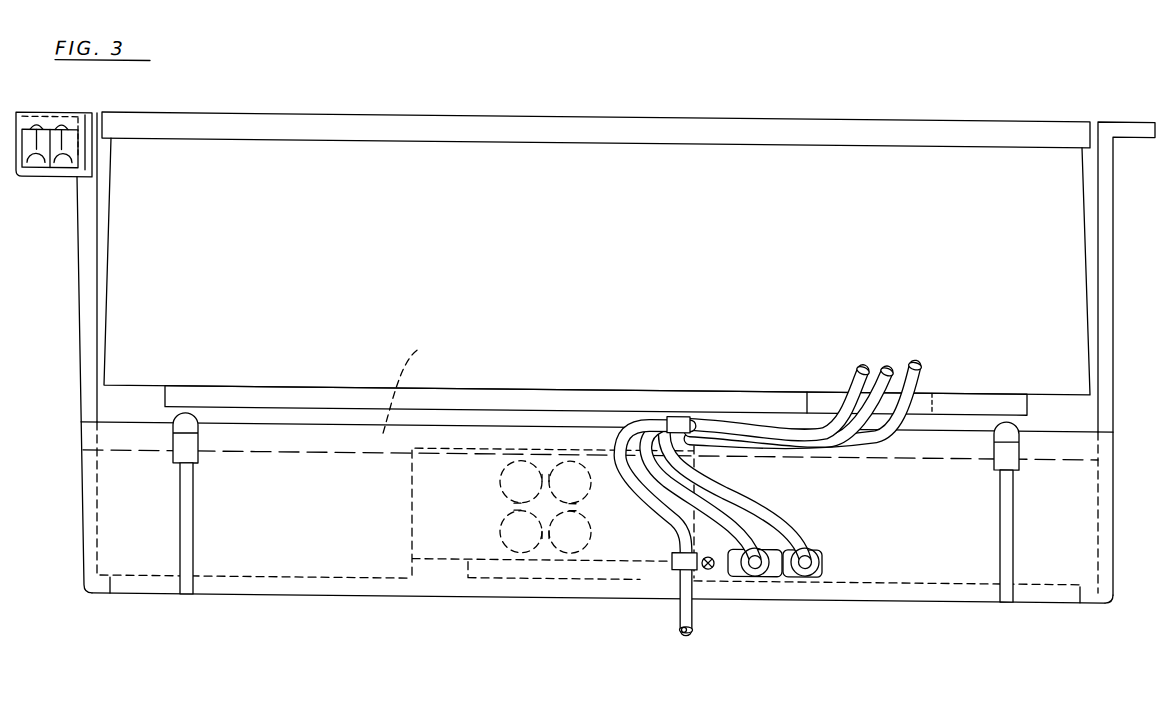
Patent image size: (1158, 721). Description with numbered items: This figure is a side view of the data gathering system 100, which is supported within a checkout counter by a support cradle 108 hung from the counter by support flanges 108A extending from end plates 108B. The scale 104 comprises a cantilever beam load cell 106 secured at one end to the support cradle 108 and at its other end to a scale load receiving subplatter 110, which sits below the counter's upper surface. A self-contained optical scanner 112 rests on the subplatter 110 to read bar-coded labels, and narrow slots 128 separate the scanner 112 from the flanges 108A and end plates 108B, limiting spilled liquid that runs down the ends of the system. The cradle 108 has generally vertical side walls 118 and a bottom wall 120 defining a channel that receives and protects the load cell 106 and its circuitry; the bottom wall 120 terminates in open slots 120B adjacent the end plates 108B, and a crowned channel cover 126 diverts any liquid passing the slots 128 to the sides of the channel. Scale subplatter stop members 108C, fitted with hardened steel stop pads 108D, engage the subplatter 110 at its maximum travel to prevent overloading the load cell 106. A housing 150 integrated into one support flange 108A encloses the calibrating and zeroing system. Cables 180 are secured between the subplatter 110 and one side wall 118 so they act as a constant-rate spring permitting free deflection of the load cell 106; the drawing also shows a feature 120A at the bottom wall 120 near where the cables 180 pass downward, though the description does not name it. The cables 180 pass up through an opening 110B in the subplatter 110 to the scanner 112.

The data gathering system 100 is at (710, 106).
The load cell scale 104 is at (587, 366).
The cantilever beam load cell 106 is at (432, 498).
The support cradle 108 is at (440, 602).
The support flange 108A is at (1138, 78).
The end plate 108B is at (78, 333).
The scale subplatter stop member 108C is at (176, 462).
The stop pad 108D is at (198, 424).
The scale load receiving subplatter 110 is at (288, 396).
The opening 110B is at (933, 384).
The optical scanner 112 is at (555, 239).
The side wall 118 is at (288, 528).
The bottom wall 120 is at (362, 575).
The tube clamp 120A is at (640, 574).
The open slot 120B is at (110, 594).
The crowned channel cover 126 is at (417, 347).
The narrow slot 128 is at (98, 114).
The housing 150 is at (70, 180).
The cable 180 is at (910, 353).